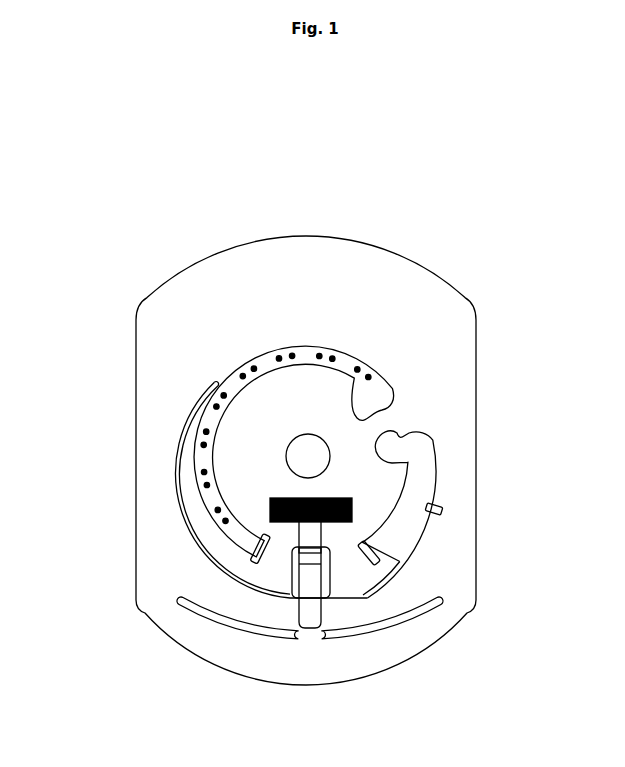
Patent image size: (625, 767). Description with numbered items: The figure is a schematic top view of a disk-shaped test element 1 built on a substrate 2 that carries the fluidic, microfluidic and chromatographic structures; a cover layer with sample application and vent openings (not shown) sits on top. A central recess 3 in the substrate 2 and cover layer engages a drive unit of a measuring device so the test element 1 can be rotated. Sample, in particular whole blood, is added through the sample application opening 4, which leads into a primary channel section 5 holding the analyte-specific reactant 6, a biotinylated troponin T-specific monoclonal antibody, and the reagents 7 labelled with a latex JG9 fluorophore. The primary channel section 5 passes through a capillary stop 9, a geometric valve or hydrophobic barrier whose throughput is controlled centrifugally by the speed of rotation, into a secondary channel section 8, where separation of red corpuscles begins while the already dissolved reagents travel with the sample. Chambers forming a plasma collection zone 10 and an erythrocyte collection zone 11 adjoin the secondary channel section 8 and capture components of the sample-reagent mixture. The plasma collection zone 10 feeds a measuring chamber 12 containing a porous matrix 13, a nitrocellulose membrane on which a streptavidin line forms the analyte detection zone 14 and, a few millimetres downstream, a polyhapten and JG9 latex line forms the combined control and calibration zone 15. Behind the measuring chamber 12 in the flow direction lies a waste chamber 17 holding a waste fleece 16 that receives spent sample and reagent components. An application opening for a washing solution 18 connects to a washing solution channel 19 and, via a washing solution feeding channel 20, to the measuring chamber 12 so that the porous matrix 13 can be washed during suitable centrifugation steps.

The test element 1 is at (292, 443).
The substrate 2 is at (407, 282).
The central recess 3 is at (307, 452).
The sample application opening 4 is at (368, 413).
The primary channel section 5 is at (309, 350).
The analyte-specific reactant 6 is at (377, 372).
The reagents labelled with a fluorophore 7 is at (358, 366).
The secondary channel section 8 is at (178, 450).
The capillary stop 9 is at (216, 379).
The plasma collection zone 10 is at (349, 614).
The erythrocyte collection zone 11 is at (293, 645).
The measuring chamber 12 is at (292, 583).
The porous matrix 13 is at (310, 591).
The analyte detection zone 14 is at (311, 568).
The combined control and calibration zone 15 is at (311, 548).
The waste fleece 16 is at (334, 497).
The waste chamber 17 is at (353, 505).
The application opening for a washing solution 18 is at (386, 441).
The washing solution channel 19 is at (441, 514).
The washing solution feeding channel 20 is at (416, 563).